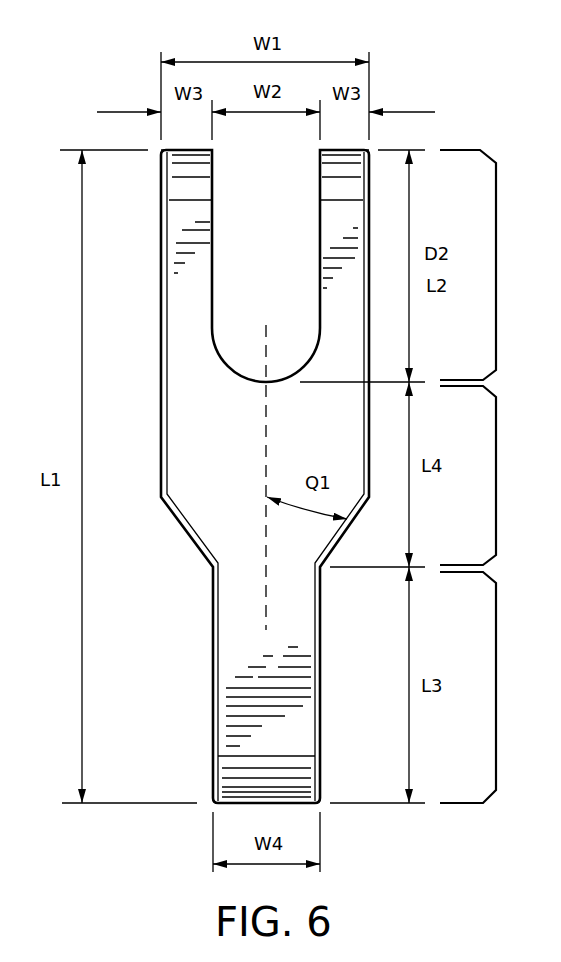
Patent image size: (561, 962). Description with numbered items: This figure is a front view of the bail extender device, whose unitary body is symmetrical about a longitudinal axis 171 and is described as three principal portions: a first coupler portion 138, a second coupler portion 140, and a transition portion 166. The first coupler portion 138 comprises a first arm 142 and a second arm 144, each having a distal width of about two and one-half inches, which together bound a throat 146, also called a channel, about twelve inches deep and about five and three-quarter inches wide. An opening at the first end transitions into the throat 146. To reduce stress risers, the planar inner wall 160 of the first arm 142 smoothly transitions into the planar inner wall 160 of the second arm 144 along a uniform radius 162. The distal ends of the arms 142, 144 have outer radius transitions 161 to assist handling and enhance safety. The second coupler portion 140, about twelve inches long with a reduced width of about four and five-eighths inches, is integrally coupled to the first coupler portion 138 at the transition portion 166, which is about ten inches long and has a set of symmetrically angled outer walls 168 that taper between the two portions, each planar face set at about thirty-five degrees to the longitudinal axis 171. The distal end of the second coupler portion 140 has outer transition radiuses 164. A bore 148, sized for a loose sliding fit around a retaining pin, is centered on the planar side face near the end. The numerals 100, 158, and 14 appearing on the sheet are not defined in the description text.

The surgical instrument / tool body 100 is at (108, 94).
The first coupler portion 138 is at (496, 208).
The second coupler portion 140 is at (496, 623).
The first arm 142 is at (161, 210).
The second arm 144 is at (364, 205).
The throat 146 is at (265, 283).
The bore 148 is at (539, 724).
The shank body 158 is at (213, 650).
The planar inner wall 160 is at (320, 228).
The outer radius transitions 161 is at (539, 131).
The uniform radius 162 is at (227, 361).
The outer transition radiuses 164 is at (387, 802).
The transition portion 166 is at (496, 435).
The symmetrically angled outer walls 168 is at (187, 533).
The longitudinal axis 171 is at (265, 455).
The instrument 14 is at (549, 864).